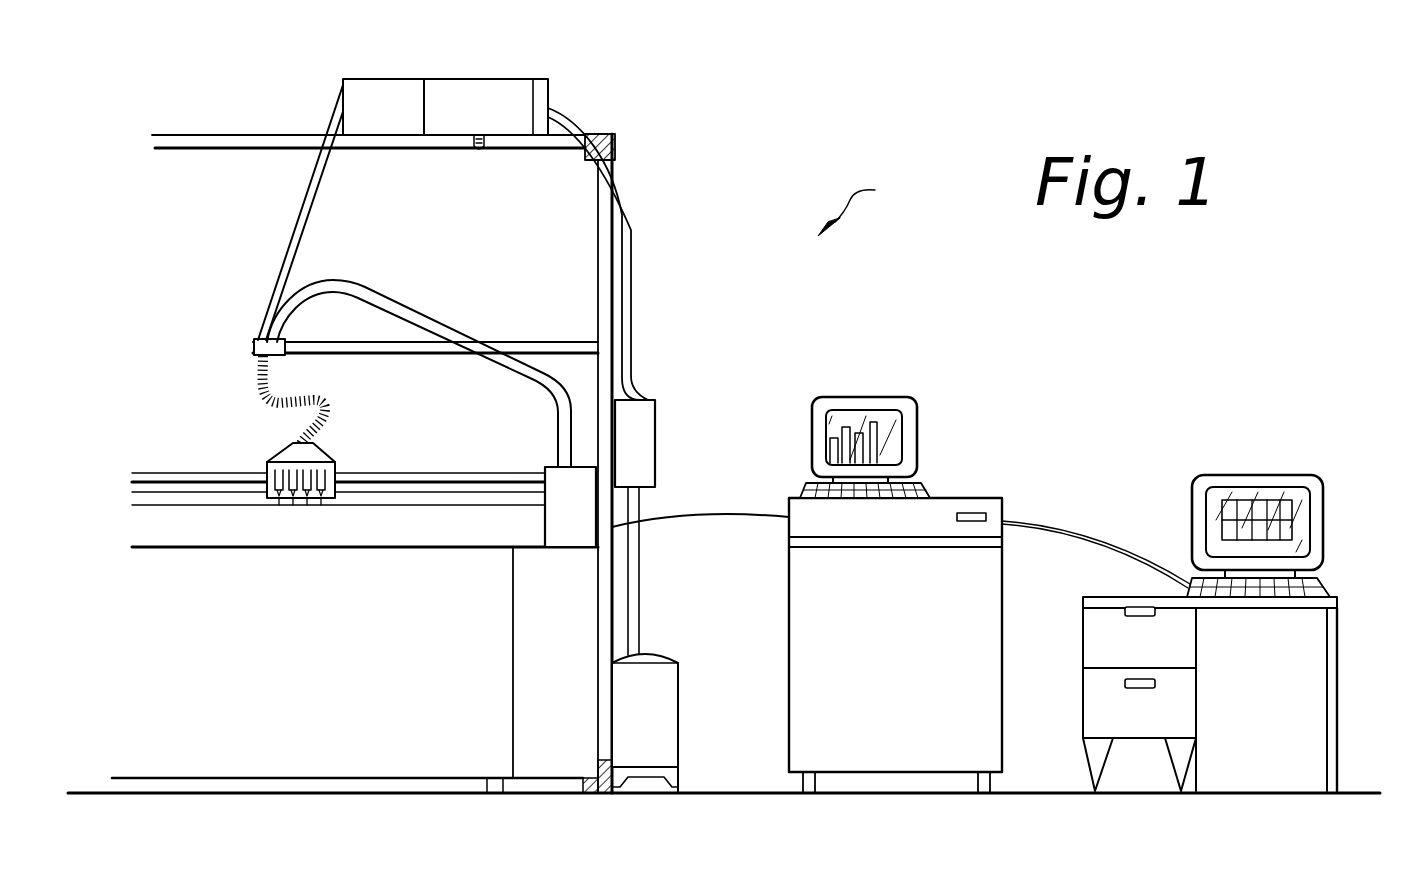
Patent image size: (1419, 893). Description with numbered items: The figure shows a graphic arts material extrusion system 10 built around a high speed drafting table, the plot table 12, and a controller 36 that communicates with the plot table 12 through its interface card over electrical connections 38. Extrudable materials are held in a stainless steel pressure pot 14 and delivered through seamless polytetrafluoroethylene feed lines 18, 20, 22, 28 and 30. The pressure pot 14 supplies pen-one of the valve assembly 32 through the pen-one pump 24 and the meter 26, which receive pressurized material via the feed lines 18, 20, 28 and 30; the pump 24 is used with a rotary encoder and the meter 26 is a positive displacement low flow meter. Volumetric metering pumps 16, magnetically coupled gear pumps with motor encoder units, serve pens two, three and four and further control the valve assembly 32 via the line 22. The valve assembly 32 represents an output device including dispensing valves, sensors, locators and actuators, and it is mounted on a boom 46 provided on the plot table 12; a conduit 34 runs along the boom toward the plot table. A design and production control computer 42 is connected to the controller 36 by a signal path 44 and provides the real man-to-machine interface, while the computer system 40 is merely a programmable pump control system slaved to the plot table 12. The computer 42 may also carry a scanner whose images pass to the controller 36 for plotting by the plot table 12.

The GAME system 10 is at (866, 206).
The plot table 12 is at (313, 548).
The pressure pot 14 is at (680, 672).
The volumetric metering pumps 16 is at (657, 433).
The feed line 18 is at (641, 577).
The feed line 20 is at (633, 290).
The line 22 is at (566, 343).
The pen-one pump 24 is at (525, 82).
The meter 26 is at (343, 92).
The feed line 28 is at (322, 196).
The feed line 30 is at (325, 397).
The valve assembly 32 is at (277, 456).
The conduit tube 34 is at (403, 303).
The controller 36 is at (960, 500).
The electrical connections 38 is at (700, 516).
The computer system 40 is at (912, 398).
The design and production control computer 42 is at (1268, 473).
The signal path 44 is at (1072, 530).
The boom 46 is at (395, 470).